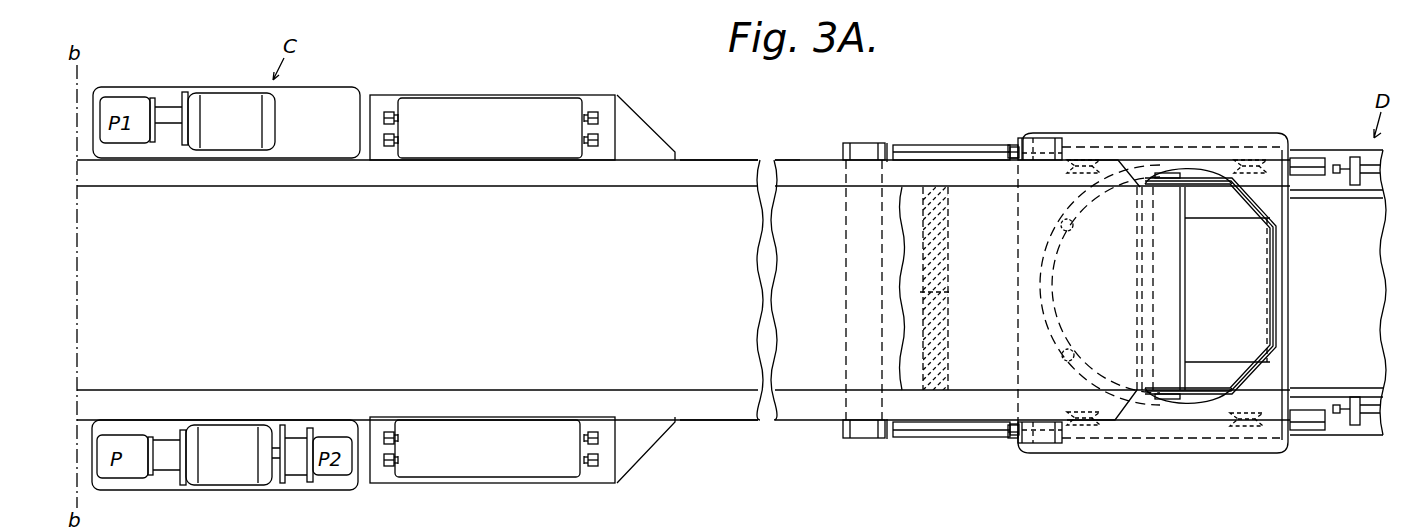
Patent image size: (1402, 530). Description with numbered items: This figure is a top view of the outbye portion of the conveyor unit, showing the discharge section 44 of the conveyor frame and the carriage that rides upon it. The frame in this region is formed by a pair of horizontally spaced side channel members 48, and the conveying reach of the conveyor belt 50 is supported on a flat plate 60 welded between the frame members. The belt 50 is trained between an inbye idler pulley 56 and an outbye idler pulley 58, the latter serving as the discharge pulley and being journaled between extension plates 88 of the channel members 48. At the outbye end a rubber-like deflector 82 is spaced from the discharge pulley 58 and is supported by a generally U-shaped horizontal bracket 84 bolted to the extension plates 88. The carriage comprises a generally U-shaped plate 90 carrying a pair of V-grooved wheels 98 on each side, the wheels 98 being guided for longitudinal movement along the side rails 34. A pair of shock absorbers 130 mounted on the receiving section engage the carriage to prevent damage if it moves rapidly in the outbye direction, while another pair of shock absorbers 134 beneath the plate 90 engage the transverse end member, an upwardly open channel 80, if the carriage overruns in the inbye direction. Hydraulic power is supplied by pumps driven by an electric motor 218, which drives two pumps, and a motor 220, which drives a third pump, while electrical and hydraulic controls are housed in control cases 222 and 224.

The side rails 34 is at (957, 158).
The discharge section 44 is at (751, 148).
The side channel members 48 is at (695, 160).
The conveyor belt 50 is at (990, 247).
The inbye idler pulley 56 is at (947, 275).
The outbye idler pulley 58 is at (1152, 272).
The flat plate 60 is at (452, 287).
The upwardly open channel 80 is at (850, 440).
The rubber-like deflector 82 is at (1265, 228).
The U-shaped horizontal bracket 84 is at (1278, 283).
The extension plates 88 is at (1137, 392).
The U-shaped plate 90 is at (1072, 143).
The V-grooved wheels 98 is at (1097, 158).
The shock absorbers 130 is at (1363, 160).
The shock absorbers 134 is at (1035, 132).
The electric motor 218 is at (229, 455).
The motor 220 is at (231, 121).
The control case 222 is at (508, 136).
The control case 224 is at (505, 459).